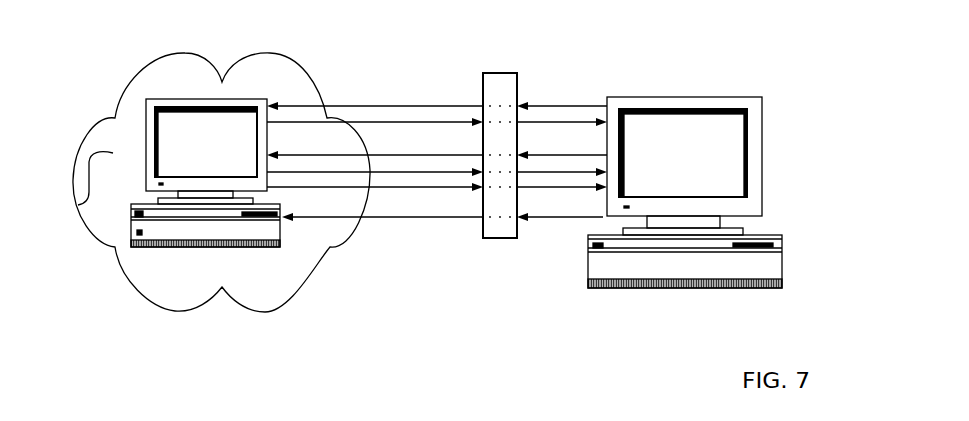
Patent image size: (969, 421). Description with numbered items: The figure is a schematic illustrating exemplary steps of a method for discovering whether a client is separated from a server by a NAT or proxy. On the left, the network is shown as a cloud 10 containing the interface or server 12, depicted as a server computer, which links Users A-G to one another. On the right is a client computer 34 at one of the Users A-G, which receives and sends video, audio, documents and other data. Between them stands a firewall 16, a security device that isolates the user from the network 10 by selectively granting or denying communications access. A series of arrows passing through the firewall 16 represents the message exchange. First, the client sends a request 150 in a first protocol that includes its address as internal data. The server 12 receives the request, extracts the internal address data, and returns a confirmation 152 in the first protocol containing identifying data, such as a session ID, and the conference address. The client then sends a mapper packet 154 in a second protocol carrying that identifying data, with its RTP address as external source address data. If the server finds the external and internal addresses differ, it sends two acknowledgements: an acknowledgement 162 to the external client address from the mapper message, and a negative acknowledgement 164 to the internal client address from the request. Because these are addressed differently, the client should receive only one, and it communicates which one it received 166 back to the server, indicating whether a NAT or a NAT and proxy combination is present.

The network 10 is at (80, 203).
The interface 12 is at (138, 75).
The firewall 16 is at (483, 73).
The computer 34 is at (728, 122).
The request 150 is at (548, 103).
The confirmation 152 is at (398, 120).
The mapper packet 154 is at (589, 153).
The acknowledgement 162 is at (343, 173).
The negative acknowledgement 164 is at (394, 187).
The client communication of received acknowledgement 166 is at (536, 222).